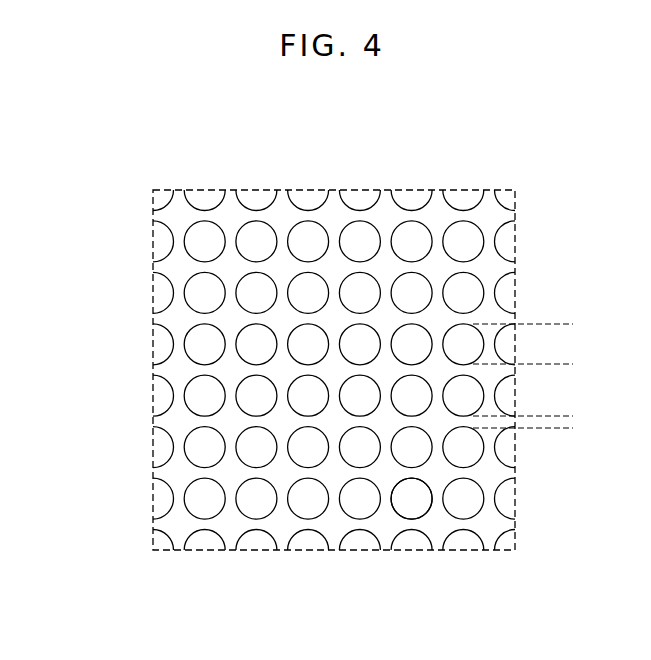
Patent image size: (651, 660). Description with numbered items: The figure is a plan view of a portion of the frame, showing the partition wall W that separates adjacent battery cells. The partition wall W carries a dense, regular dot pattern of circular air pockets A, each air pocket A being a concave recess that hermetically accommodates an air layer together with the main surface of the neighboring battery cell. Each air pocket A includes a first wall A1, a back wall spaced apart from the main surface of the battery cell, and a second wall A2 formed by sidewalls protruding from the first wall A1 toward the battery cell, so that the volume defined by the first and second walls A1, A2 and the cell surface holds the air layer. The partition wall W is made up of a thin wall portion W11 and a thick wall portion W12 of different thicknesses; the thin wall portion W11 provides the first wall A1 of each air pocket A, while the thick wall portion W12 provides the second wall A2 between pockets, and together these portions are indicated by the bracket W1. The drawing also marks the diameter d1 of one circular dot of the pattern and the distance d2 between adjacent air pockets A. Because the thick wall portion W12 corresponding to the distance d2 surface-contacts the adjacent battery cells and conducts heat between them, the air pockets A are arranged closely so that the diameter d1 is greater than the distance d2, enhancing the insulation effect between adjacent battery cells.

The partition wall W is at (510, 170).
The air pocket A is at (463, 242).
The first wall A1 is at (410, 500).
The second wall A2 is at (418, 517).
The diameter d1 is at (570, 324).
The distance d2 is at (570, 396).
The wafer pattern region W1 is at (60, 452).
The thin wall portion W11 is at (203, 499).
The thick wall portion W12 is at (200, 472).